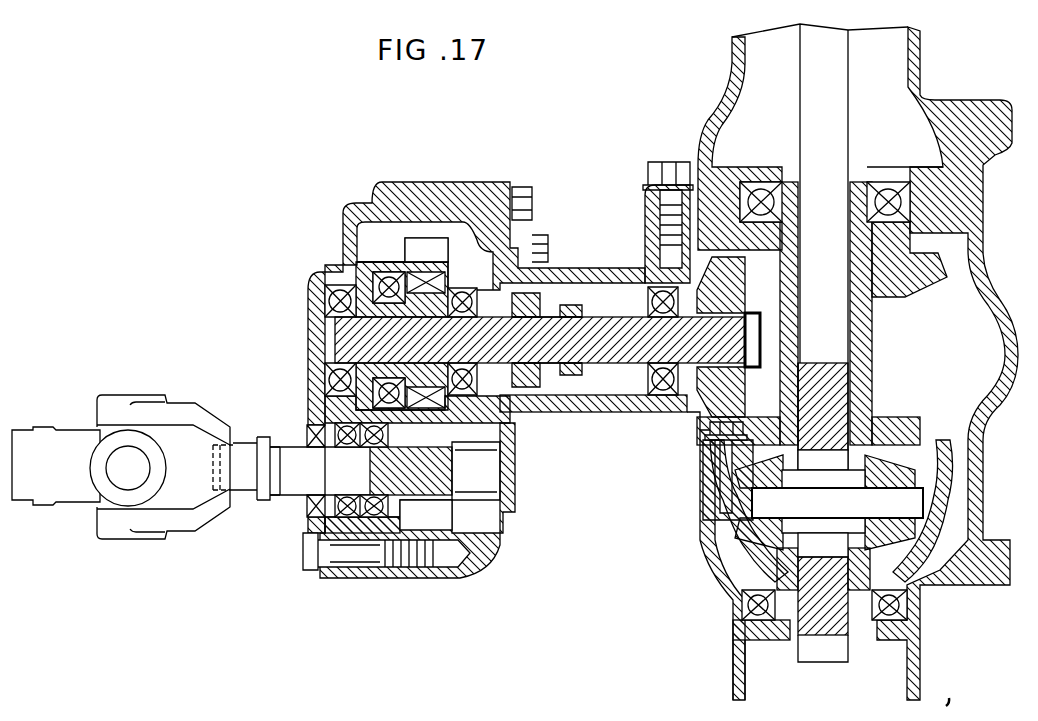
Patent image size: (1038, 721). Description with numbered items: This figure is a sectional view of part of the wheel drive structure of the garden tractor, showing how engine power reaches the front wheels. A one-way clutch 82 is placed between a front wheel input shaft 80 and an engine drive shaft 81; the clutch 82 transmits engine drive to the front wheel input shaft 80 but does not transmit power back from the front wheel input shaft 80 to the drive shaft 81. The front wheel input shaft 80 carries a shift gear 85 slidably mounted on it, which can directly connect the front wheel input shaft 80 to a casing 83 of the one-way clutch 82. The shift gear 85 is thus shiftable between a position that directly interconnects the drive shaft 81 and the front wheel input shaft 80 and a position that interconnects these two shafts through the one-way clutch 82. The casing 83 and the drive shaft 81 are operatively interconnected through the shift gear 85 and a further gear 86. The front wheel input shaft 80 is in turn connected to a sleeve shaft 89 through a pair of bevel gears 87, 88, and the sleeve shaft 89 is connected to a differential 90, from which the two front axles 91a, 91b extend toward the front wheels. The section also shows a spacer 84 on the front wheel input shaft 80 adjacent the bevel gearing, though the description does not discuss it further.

The front wheel input shaft 80 is at (617, 360).
The engine drive shaft 81 is at (290, 487).
The one-way clutch 82 is at (403, 260).
The casing 83 is at (343, 264).
The spacer 84 is at (540, 298).
The shift gear 85 is at (436, 245).
The gear 86 is at (432, 502).
The bevel gear 87 is at (692, 413).
The bevel gear 88 is at (932, 277).
The sleeve shaft 89 is at (875, 343).
The differential 90 is at (928, 509).
The front axle 91a is at (838, 650).
The front axle 91b is at (838, 103).